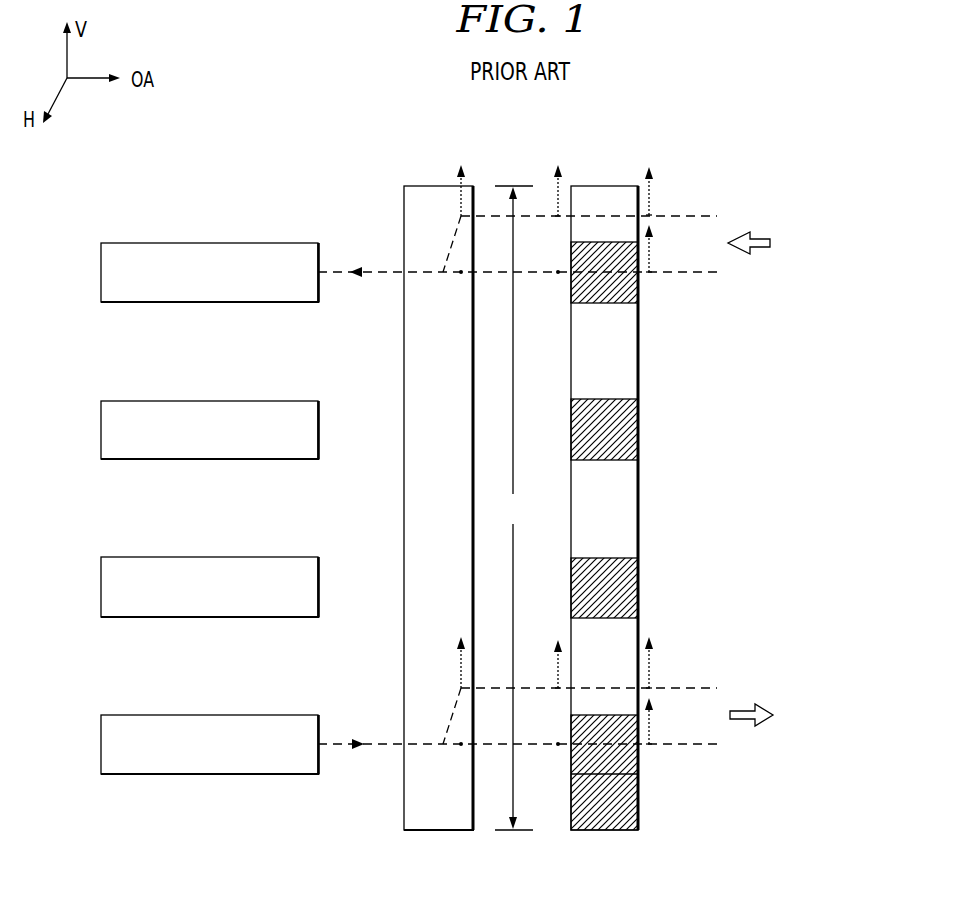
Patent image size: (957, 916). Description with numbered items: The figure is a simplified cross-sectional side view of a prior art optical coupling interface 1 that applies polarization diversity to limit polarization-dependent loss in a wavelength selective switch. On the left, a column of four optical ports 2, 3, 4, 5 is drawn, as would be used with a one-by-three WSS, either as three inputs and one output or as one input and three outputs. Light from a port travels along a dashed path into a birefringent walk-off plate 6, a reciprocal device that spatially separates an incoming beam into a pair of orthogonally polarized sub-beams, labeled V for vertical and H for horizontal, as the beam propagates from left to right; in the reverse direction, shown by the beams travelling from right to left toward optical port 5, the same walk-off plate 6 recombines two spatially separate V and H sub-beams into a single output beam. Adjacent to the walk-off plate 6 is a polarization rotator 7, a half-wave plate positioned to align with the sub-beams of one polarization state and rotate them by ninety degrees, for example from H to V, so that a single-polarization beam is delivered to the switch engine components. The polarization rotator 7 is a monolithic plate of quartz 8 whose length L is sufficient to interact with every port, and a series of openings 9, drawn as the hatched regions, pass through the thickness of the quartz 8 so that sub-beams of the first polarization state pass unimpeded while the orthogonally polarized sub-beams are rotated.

The optical coupling interface 1 is at (433, 122).
The optical port 2 is at (101, 744).
The optical port 3 is at (101, 587).
The optical port 4 is at (101, 430).
The optical port 5 is at (101, 272).
The birefringent walk-off plate 6 is at (440, 822).
The polarization rotator 7 is at (603, 850).
The quartz 8 is at (640, 353).
The openings 9 is at (598, 192).